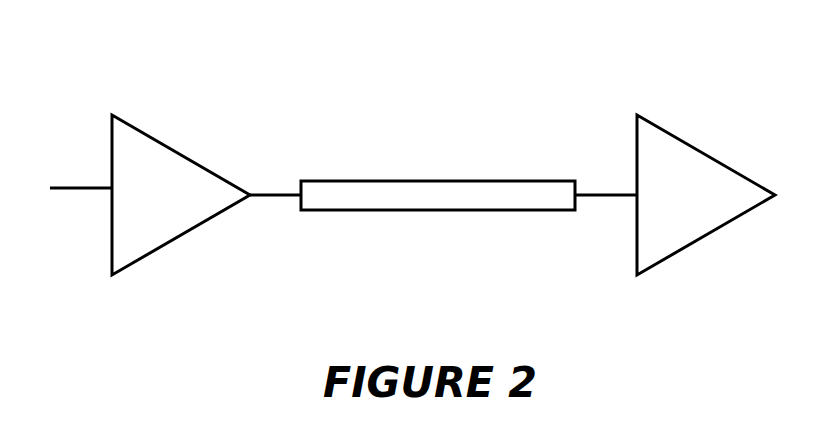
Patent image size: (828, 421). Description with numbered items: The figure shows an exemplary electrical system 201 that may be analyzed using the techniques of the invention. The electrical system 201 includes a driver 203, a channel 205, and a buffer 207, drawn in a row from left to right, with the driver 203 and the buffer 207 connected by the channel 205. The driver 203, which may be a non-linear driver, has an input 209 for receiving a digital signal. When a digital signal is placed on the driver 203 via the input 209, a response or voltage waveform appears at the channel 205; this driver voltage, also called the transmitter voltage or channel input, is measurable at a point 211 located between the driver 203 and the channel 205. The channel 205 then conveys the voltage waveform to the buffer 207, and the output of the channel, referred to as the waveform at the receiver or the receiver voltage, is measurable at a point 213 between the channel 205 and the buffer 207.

The electrical system 201 is at (283, 100).
The driver 203 is at (181, 195).
The channel 205 is at (438, 195).
The buffer 207 is at (706, 195).
The input 209 is at (72, 175).
The point 211 is at (283, 197).
The point 213 is at (627, 191).